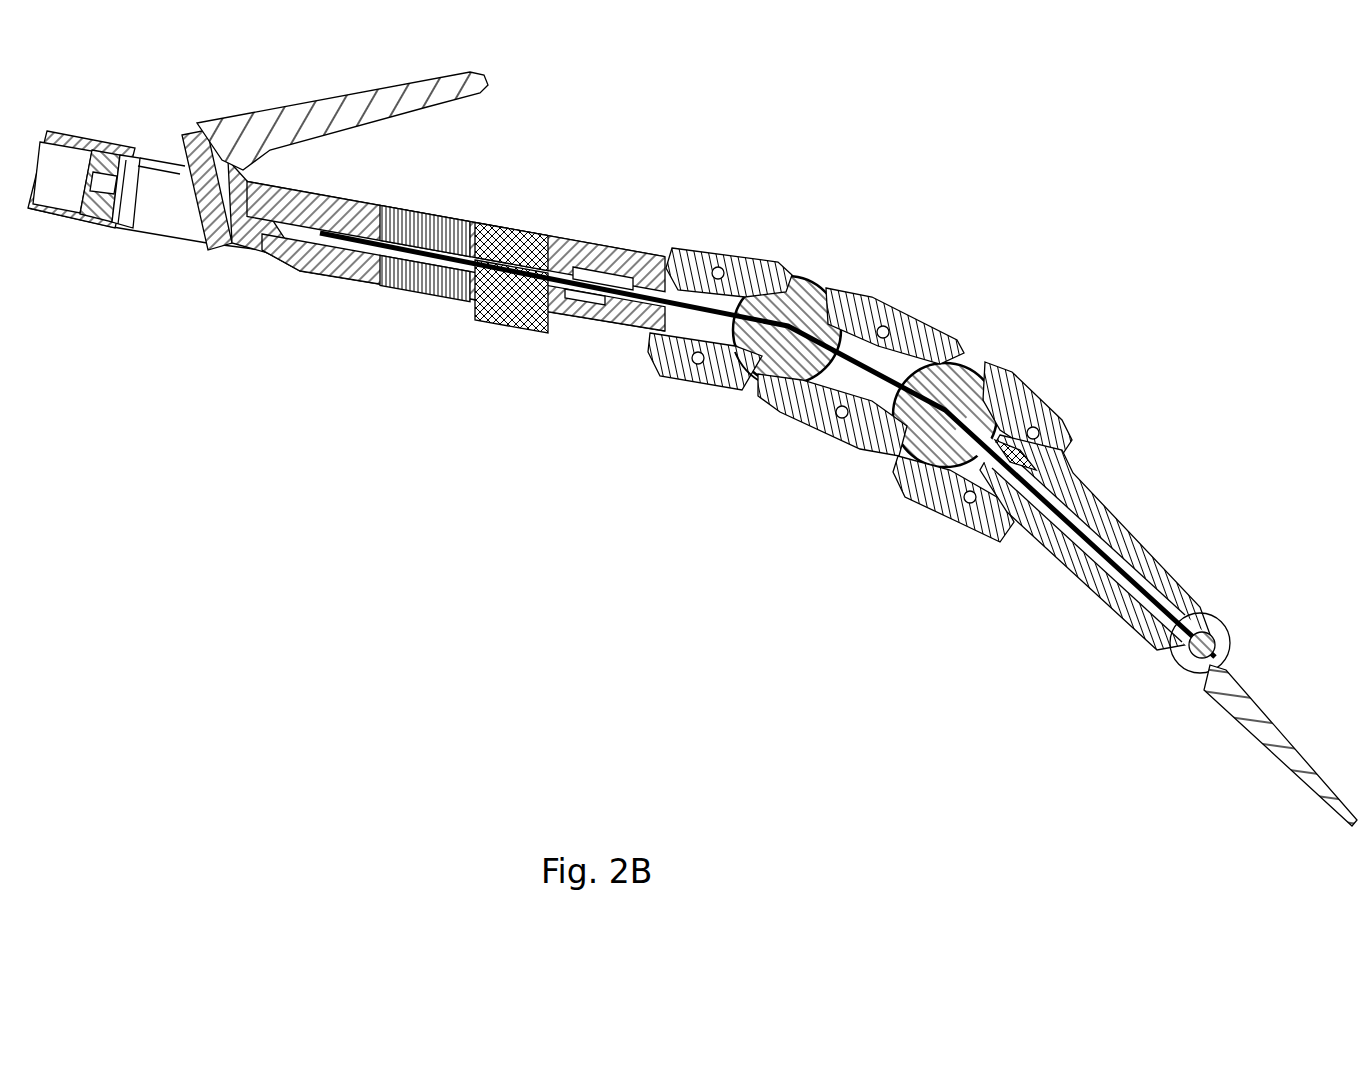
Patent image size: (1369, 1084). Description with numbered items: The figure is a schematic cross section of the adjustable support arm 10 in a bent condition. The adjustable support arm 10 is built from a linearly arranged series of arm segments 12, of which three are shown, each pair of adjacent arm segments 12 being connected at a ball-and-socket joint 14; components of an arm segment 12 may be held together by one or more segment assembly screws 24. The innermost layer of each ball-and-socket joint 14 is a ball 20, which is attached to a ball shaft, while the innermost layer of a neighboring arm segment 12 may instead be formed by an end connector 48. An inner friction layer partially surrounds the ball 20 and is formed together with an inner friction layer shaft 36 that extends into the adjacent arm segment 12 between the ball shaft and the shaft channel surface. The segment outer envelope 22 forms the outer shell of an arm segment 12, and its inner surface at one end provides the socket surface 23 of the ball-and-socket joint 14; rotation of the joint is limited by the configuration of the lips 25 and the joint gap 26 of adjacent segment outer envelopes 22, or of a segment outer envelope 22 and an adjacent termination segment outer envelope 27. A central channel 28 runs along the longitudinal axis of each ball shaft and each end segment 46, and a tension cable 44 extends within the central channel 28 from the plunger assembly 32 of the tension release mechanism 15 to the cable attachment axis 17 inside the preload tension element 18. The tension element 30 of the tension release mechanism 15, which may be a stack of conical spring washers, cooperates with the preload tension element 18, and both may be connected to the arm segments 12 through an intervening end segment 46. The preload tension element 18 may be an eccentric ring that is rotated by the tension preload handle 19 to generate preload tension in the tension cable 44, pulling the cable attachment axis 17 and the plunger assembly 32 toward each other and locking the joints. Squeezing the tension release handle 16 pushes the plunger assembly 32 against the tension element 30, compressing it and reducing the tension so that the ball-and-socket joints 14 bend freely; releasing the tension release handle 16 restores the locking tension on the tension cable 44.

The adjustable support arm 10 is at (966, 163).
The arm segment 12 is at (701, 228).
The ball-and-socket joint 14 is at (817, 257).
The tension release mechanism 15 is at (160, 272).
The tension release handle 16 is at (432, 112).
The cable attachment axis 17 is at (1200, 651).
The preload tension element 18 is at (1218, 614).
The tension preload handle 19 is at (1281, 742).
The ball 20 is at (750, 367).
The segment outer envelope 22 is at (822, 420).
The socket surface 23 is at (953, 500).
The segment assembly screw 24 is at (690, 363).
The lip 25 is at (993, 373).
The joint gap 26 is at (805, 275).
The termination segment outer envelope 27 is at (1068, 443).
The central channel 28 is at (548, 270).
The tension element 30 is at (413, 280).
The plunger assembly 32 is at (315, 265).
The inner friction layer shaft 36 is at (893, 442).
The tension cable 44 is at (603, 293).
The end segment 46 is at (517, 300).
The end connector 48 is at (1007, 450).